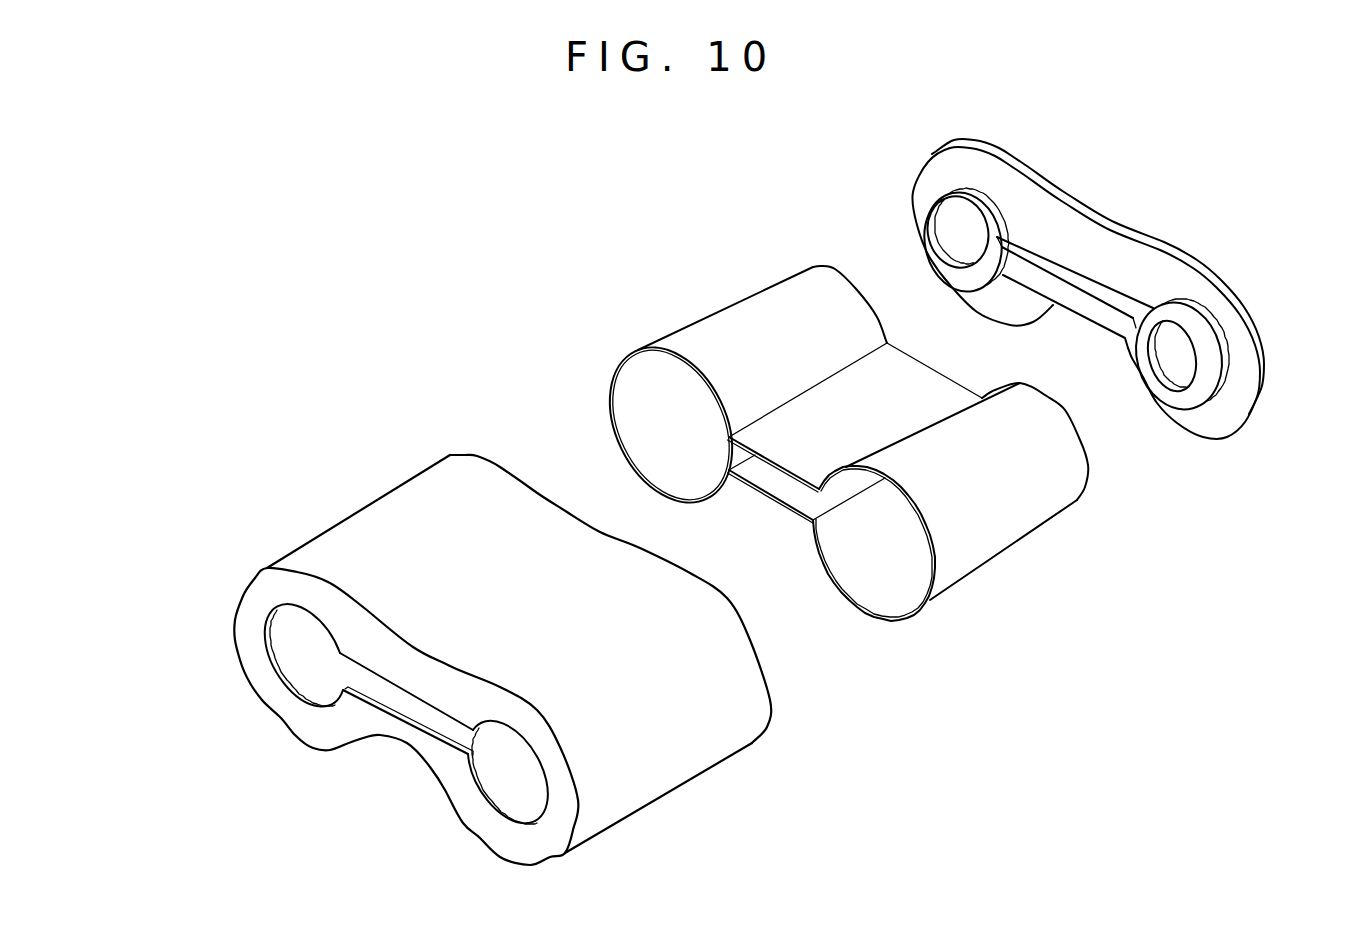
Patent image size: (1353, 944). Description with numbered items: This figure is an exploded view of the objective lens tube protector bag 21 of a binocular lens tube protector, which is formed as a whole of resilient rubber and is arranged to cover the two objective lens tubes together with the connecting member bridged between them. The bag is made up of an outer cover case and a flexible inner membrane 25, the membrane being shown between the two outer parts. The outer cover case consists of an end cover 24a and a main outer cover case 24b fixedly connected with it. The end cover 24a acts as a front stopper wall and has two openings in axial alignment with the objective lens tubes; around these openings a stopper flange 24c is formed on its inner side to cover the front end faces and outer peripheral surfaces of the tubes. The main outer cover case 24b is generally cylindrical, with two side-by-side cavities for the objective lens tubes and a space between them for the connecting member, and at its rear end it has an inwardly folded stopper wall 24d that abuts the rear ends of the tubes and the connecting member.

The objective lens tube protector bag 21 is at (630, 300).
The end cover 24a is at (1118, 359).
The main outer cover case 24b is at (592, 660).
The stopper flange 24c is at (1112, 302).
The inwardly folded stopper wall 24d is at (332, 714).
The flexible inner membrane 25 is at (868, 474).